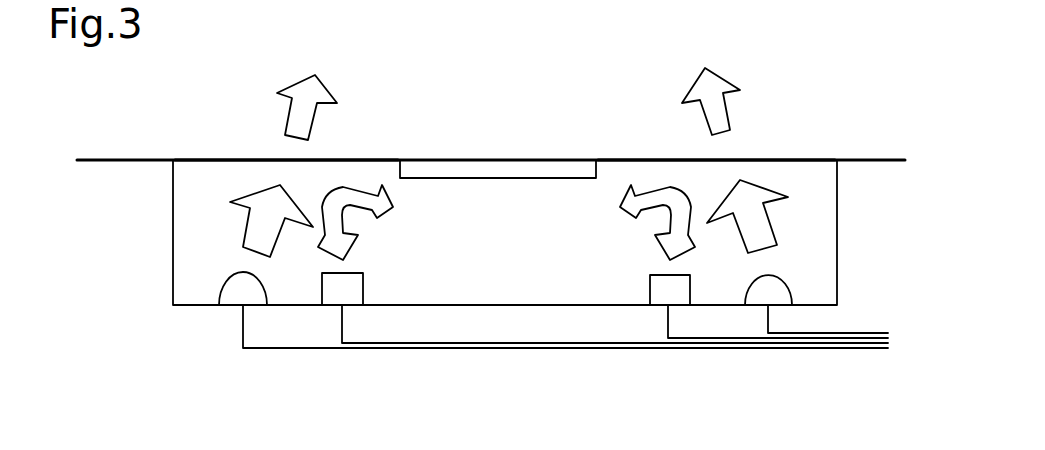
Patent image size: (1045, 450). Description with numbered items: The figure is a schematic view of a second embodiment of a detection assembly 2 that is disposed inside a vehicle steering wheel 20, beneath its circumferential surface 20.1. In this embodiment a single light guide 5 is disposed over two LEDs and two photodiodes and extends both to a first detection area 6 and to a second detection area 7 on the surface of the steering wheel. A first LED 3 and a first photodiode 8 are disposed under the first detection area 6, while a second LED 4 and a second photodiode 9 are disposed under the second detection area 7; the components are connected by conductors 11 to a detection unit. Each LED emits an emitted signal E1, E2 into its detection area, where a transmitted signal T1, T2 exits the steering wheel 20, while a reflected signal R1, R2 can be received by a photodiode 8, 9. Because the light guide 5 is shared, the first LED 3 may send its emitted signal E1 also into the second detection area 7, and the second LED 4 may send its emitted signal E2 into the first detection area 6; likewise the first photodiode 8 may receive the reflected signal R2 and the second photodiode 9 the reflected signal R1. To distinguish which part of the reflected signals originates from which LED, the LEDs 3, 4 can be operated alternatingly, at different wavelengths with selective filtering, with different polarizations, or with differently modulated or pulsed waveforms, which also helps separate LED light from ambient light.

The detection assembly 2 is at (866, 208).
The circumferential surface 20.1 is at (121, 148).
The steering wheel 20 is at (119, 231).
The first detection area 6 is at (244, 148).
The second detection area 7 is at (656, 148).
The light guide 5 is at (498, 290).
The first LED 3 is at (228, 278).
The second LED 4 is at (790, 290).
The first photodiode 8 is at (363, 282).
The second photodiode 9 is at (650, 285).
The conductors 11 is at (530, 350).
The first transmitted signal T1 is at (352, 115).
The second transmitted signal T2 is at (746, 103).
The first reflected signal R1 is at (359, 178).
The second reflected signal R2 is at (647, 178).
The first emitted signal E1 is at (215, 211).
The second emitted signal E2 is at (788, 226).